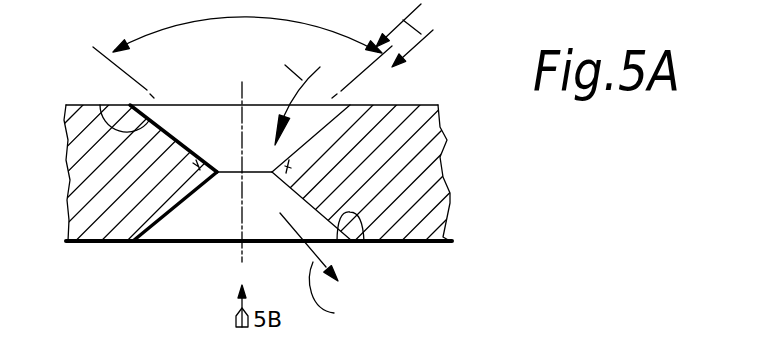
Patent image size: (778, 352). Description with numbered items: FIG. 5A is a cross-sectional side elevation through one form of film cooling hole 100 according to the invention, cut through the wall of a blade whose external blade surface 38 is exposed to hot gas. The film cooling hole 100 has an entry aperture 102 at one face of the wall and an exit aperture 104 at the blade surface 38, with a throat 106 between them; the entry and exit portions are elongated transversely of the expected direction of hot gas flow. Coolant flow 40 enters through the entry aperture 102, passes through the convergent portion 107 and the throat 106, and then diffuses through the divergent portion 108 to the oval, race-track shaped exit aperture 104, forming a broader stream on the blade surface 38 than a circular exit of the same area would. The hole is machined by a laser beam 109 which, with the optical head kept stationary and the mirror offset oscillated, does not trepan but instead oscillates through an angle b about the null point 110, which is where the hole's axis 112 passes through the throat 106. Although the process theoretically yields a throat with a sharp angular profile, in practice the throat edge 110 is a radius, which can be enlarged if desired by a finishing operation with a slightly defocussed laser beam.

The blade surface 38 is at (433, 245).
The coolant flow 40 is at (314, 187).
The film cooling hole 100 is at (160, 246).
The entry aperture 102 is at (183, 105).
The exit aperture 104 is at (200, 243).
The throat 106 is at (223, 172).
The convergent portion 107 is at (104, 104).
The divergent portion 108 is at (360, 212).
The laser beam 109 is at (421, 34).
The null point / throat edge 110 is at (240, 173).
The hole axis 112 is at (243, 256).
The angle of oscillation b is at (130, 27).